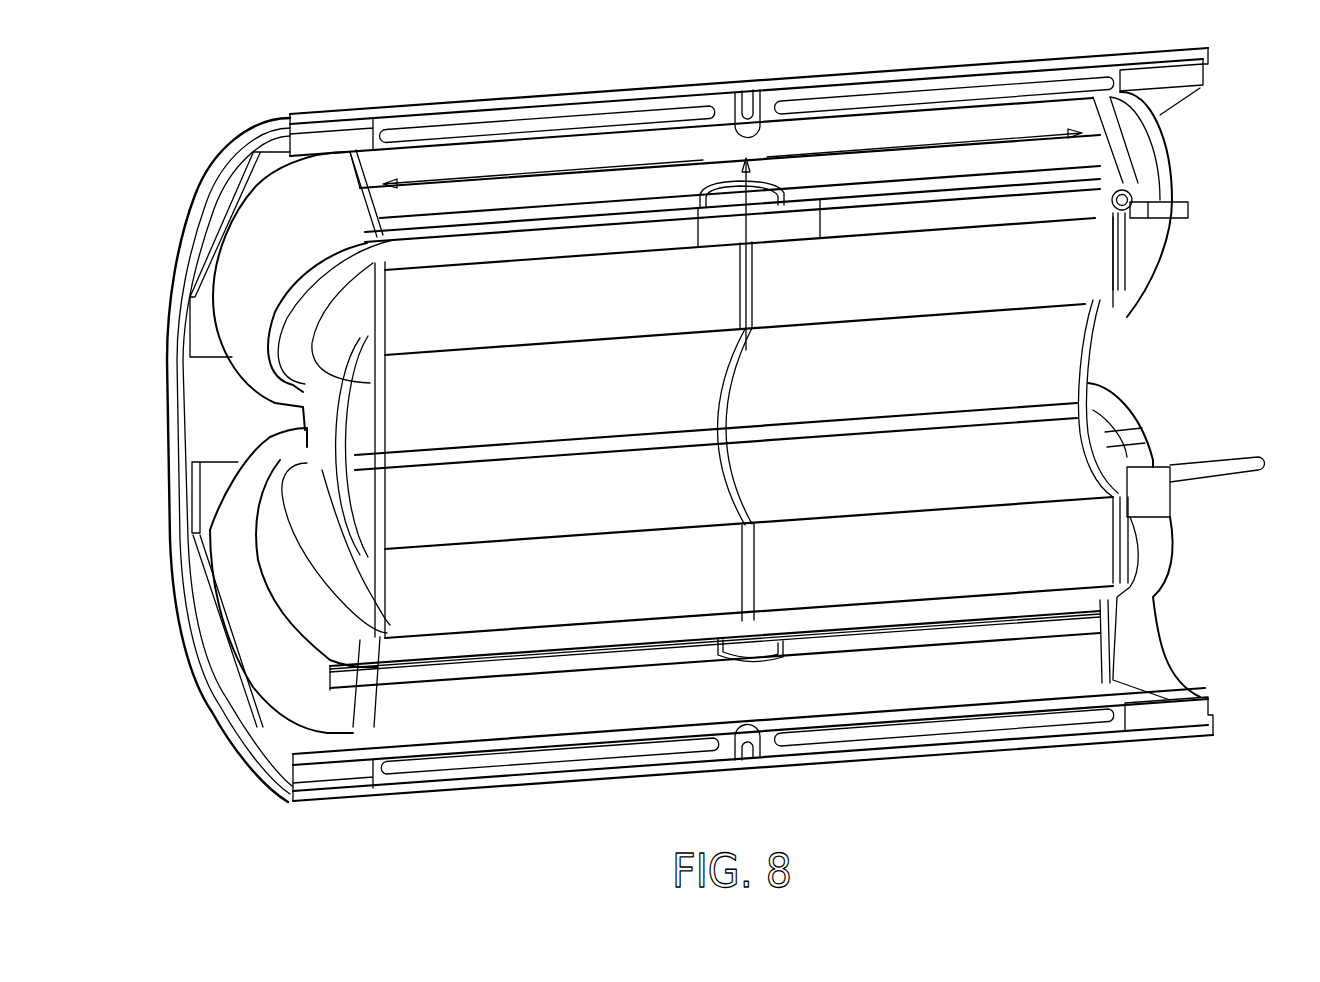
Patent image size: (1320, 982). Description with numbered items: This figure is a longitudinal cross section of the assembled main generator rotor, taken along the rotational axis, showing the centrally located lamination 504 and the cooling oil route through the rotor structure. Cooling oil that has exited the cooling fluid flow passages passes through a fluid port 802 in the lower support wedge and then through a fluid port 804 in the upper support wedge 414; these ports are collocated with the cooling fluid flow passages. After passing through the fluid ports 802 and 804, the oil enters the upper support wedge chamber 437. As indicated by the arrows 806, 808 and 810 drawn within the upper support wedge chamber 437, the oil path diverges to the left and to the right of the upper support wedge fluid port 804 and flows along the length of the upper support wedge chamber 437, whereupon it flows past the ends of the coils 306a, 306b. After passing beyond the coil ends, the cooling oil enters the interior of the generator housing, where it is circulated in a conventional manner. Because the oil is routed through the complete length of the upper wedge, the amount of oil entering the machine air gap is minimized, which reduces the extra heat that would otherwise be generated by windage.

The coil 306a is at (270, 205).
The coil 306b is at (262, 660).
The upper support wedge 414 is at (749, 100).
The upper support wedge chamber 437 is at (1035, 685).
The lamination 504 is at (1010, 380).
The fluid port 802 is at (780, 235).
The fluid port 804 is at (750, 660).
The arrow 806 is at (738, 278).
The arrow 808 is at (503, 172).
The arrow 810 is at (967, 142).